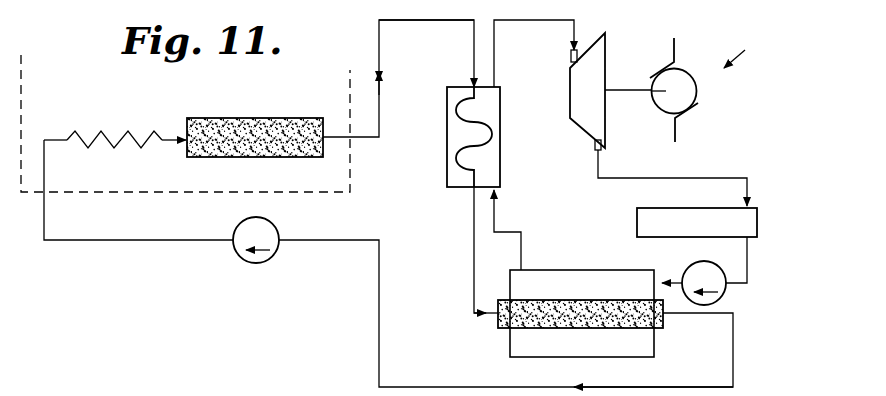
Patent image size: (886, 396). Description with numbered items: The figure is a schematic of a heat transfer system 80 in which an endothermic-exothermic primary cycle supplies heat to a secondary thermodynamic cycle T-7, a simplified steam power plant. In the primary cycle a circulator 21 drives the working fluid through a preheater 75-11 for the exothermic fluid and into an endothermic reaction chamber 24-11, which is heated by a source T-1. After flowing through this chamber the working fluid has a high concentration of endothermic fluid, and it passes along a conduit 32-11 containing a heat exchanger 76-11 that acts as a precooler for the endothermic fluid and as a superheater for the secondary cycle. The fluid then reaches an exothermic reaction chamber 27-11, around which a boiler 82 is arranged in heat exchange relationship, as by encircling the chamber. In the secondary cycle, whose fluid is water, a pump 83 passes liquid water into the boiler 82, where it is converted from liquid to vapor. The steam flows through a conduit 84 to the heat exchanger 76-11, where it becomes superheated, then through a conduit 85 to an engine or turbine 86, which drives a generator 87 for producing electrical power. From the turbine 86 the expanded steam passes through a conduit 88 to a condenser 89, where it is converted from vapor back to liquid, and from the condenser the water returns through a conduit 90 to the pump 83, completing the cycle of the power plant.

The heat source T-1 is at (185, 123).
The preheater 75-11 is at (110, 135).
The endothermic reaction chamber 24-11 is at (275, 158).
The conduit 32-11 is at (410, 21).
The circulator 21 is at (272, 258).
The heat exchanger 76-11 is at (447, 152).
The conduit 85 is at (511, 21).
The turbine 86 is at (600, 66).
The generator 87 is at (698, 92).
The secondary thermodynamic cycle T-7 is at (746, 54).
The conduit 88 is at (634, 178).
The condenser 89 is at (637, 227).
The conduit 90 is at (749, 262).
The pump 83 is at (722, 298).
The boiler 82 is at (612, 358).
The exothermic reaction chamber 27-11 is at (500, 328).
The conduit 84 is at (510, 234).
The heat transfer system 80 is at (143, 294).